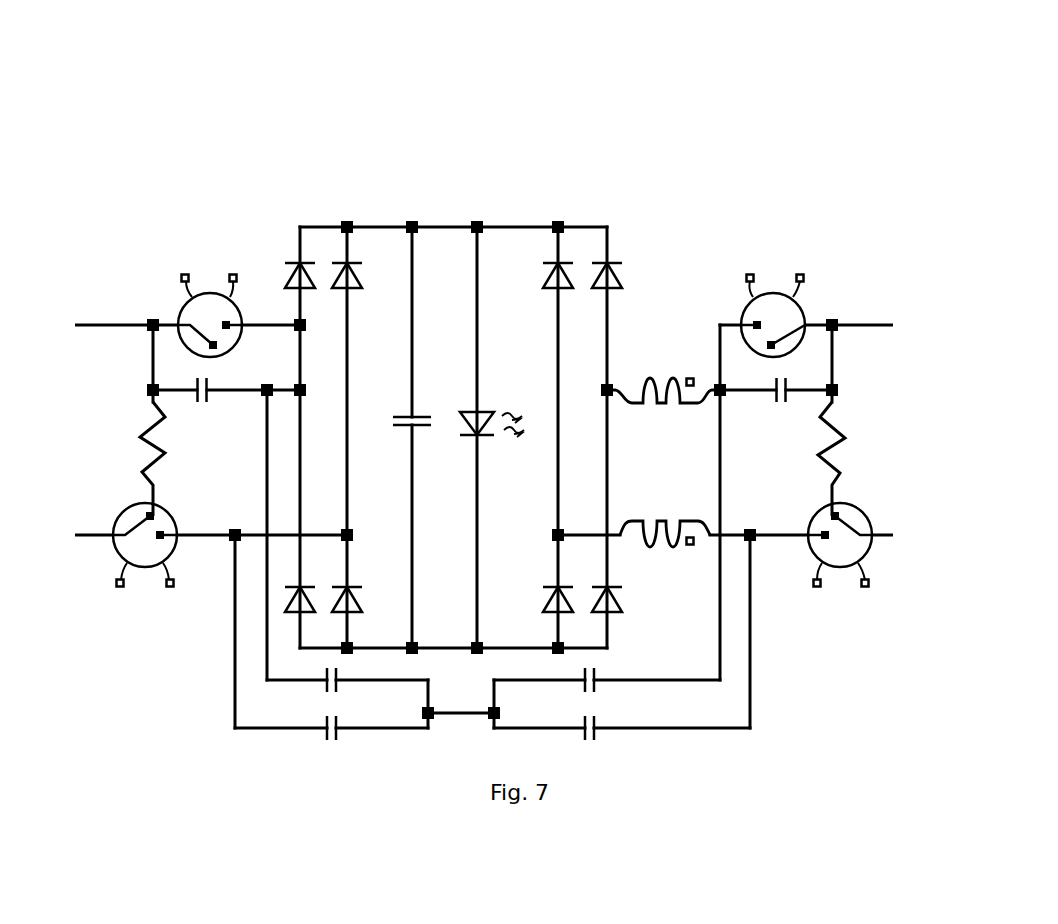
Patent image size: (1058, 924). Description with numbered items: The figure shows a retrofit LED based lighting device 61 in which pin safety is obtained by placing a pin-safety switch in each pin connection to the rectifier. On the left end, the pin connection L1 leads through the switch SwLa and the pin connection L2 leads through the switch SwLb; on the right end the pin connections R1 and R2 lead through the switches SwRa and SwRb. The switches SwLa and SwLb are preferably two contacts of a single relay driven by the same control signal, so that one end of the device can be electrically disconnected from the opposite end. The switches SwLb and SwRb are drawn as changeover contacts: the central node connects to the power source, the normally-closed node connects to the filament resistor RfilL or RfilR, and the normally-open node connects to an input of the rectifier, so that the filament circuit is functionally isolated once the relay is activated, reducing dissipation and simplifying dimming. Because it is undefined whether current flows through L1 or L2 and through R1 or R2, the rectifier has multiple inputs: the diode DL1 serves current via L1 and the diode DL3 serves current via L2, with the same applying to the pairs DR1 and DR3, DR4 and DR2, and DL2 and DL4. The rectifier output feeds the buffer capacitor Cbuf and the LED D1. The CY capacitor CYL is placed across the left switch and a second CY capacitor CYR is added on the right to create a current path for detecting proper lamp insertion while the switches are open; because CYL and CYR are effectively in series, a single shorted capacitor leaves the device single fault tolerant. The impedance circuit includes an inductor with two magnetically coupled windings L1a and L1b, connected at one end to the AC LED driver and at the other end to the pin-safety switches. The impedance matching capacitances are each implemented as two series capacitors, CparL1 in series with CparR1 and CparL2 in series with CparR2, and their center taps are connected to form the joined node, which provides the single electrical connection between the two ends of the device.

The retrofit LED based lighting device 61 is at (630, 169).
The pin-safety switch SwLa is at (210, 301).
The pin-safety switch SwLb is at (166, 540).
The pin-safety switch SwRa is at (773, 301).
The pin-safety switch SwRb is at (814, 540).
The rectifier diode DL1 is at (283, 263).
The rectifier diode DL2 is at (277, 599).
The rectifier diode DL3 is at (370, 275).
The rectifier diode DL4 is at (368, 599).
The rectifier diode DR1 is at (623, 264).
The rectifier diode DR2 is at (632, 599).
The rectifier diode DR3 is at (534, 275).
The rectifier diode DR4 is at (531, 599).
The buffer capacitor Cbuf is at (429, 405).
The LED D1 is at (492, 411).
The CY capacitor CYL is at (200, 404).
The second CY capacitor CYR is at (784, 406).
The filament resistor RfilL is at (133, 459).
The filament resistor RfilR is at (854, 459).
The magnetically coupled winding L1a is at (663, 379).
The magnetically coupled winding L1b is at (665, 521).
The impedance matching capacitor CparL1 is at (290, 687).
The impedance matching capacitor CparL2 is at (373, 722).
The impedance matching capacitor CparR1 is at (547, 687).
The impedance matching capacitor CparR2 is at (630, 723).
The pin connection L1 is at (113, 326).
The pin connection L2 is at (80, 535).
The pin connection R1 is at (863, 326).
The pin connection R2 is at (896, 535).